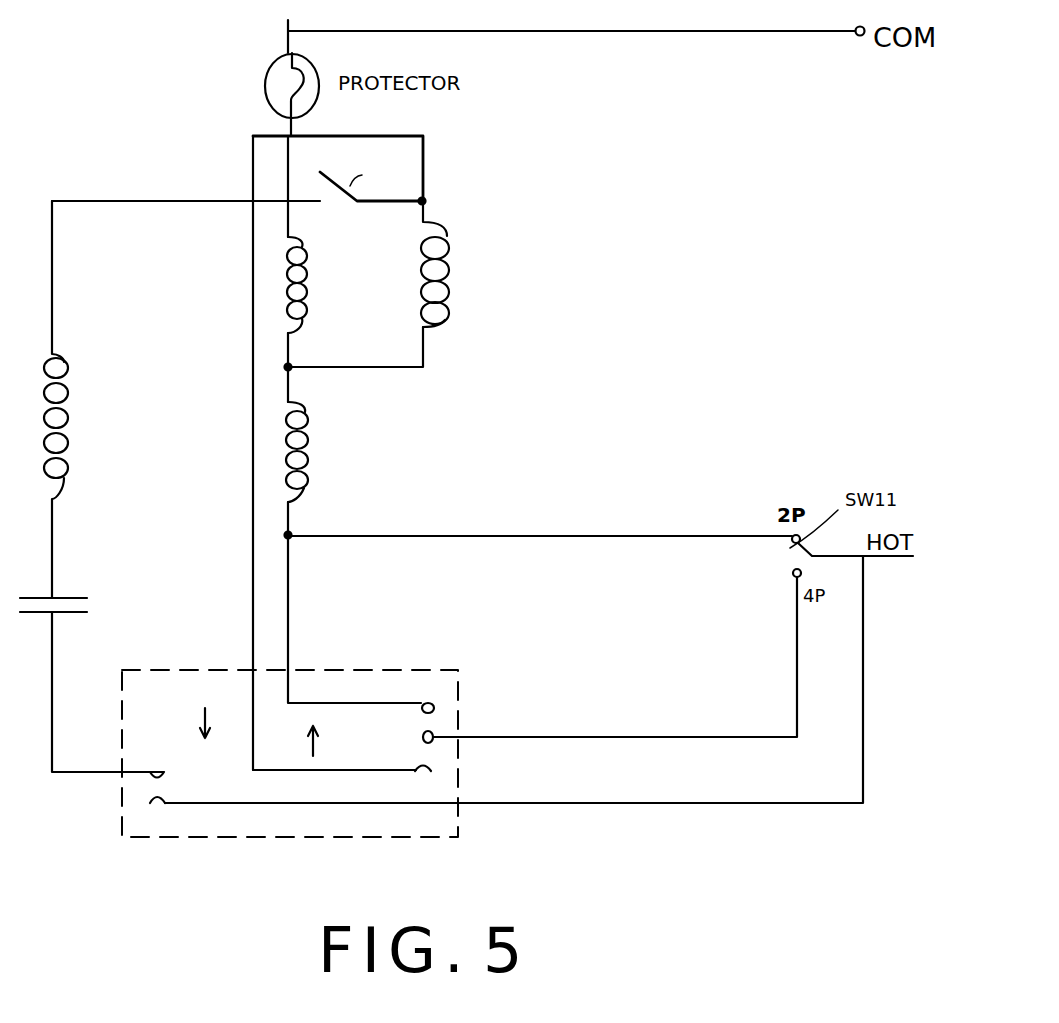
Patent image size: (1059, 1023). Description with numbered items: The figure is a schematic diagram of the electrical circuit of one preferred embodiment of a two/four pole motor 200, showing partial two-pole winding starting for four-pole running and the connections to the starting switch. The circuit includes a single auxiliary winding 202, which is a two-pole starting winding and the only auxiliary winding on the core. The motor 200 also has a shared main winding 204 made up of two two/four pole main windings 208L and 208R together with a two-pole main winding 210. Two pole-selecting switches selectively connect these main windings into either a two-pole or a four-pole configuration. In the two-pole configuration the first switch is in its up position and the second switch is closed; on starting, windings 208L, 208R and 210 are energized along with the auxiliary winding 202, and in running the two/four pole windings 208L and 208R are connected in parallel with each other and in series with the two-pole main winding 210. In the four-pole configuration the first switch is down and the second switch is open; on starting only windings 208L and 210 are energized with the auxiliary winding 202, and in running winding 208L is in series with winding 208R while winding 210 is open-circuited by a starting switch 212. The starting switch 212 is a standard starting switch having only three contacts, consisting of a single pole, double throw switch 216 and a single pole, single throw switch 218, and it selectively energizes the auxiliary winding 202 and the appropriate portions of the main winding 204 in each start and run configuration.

The 2/4 pole motor 200 is at (500, 461).
The auxiliary winding 202 is at (63, 357).
The shared main winding 204 is at (508, 172).
The 2/4 pole main winding 208L is at (303, 327).
The 2/4 pole main winding 208R is at (447, 312).
The 2-pole main winding 210 is at (307, 480).
The starting switch 212 is at (458, 826).
The single pole, double throw switch 216 is at (449, 699).
The single pole, single throw switch 218 is at (187, 777).